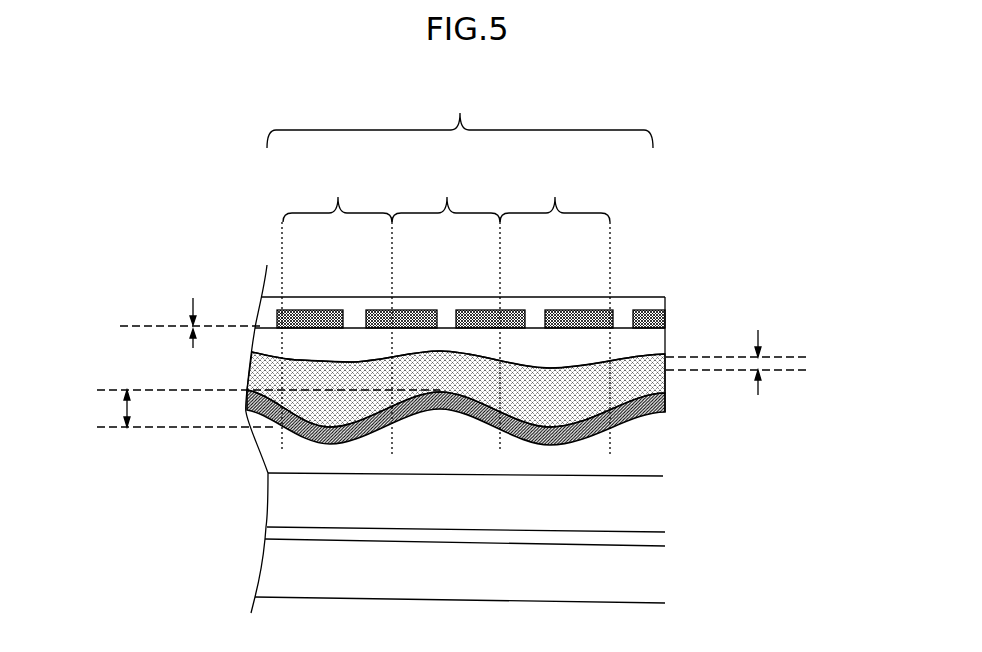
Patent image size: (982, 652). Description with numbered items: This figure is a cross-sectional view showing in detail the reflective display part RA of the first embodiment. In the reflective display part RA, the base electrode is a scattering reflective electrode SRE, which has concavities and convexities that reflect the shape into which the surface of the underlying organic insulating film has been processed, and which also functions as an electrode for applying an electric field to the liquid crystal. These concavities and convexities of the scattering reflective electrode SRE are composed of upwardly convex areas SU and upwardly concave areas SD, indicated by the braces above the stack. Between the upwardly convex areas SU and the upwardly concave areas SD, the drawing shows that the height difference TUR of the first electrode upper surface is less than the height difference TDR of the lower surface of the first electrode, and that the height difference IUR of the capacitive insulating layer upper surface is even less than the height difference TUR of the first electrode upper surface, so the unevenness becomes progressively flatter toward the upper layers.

The reflective display part RA is at (460, 115).
The upwardly concave areas SD is at (446, 314).
The upwardly convex areas SU is at (446, 314).
The height difference of the capacitive insulating layer upper surface IUR is at (183, 326).
The height difference of the lower surface of the first electrode TDR is at (115, 391).
The height difference of the first electrode upper surface TUR is at (763, 370).
The scattering reflective electrode SRE is at (668, 411).